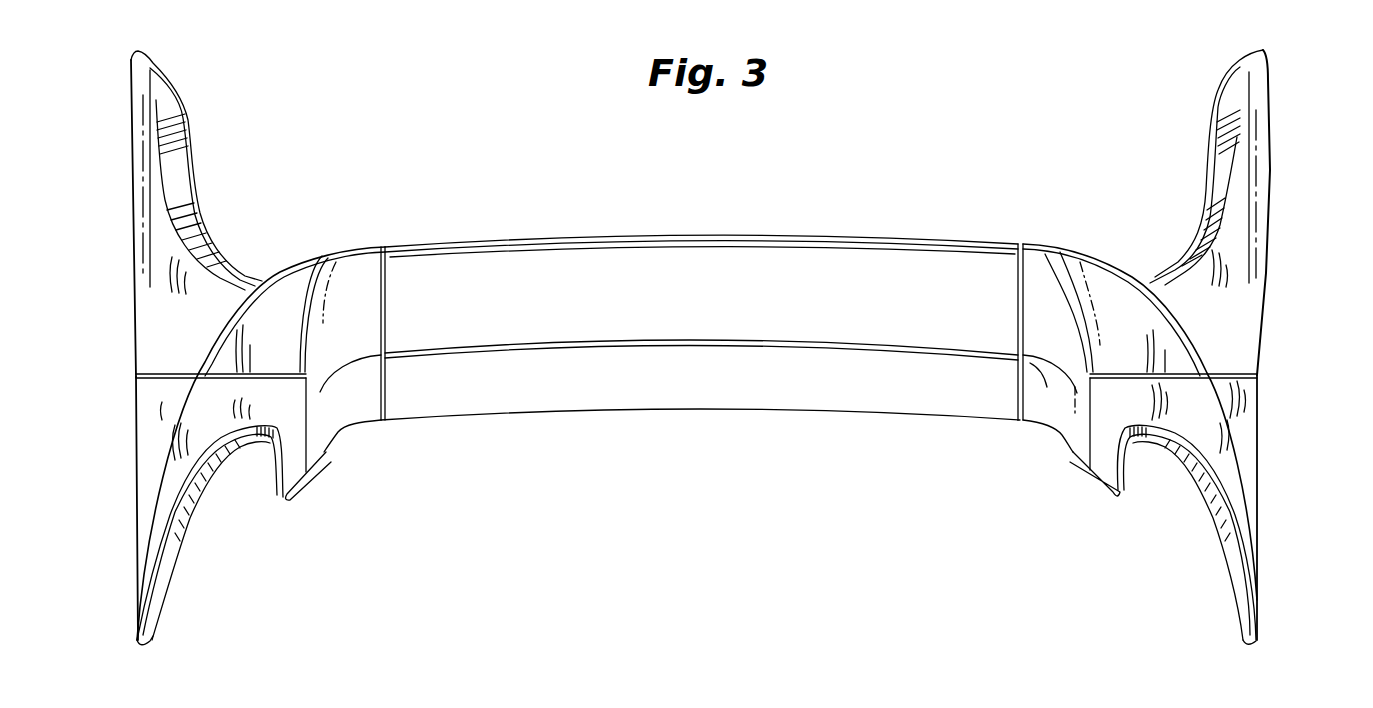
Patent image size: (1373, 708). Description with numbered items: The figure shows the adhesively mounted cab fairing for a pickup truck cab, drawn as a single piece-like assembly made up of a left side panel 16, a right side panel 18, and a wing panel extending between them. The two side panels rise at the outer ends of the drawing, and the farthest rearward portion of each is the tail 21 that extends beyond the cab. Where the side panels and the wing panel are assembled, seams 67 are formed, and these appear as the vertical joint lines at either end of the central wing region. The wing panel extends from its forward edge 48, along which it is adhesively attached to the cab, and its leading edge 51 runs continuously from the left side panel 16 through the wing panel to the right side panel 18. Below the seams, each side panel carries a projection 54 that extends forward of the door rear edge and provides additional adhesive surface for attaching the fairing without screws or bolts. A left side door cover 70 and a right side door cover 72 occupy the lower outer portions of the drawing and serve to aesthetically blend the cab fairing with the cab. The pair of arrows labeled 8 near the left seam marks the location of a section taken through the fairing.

The left side panel 16 is at (1268, 265).
The right side panel 18 is at (131, 263).
The tail 21 is at (587, 234).
The seams 67 is at (1022, 244).
The forward edge 48 is at (657, 412).
The leading edge 51 is at (332, 442).
The projection 54 is at (330, 445).
The left side door cover 70 is at (1258, 453).
The right side door cover 72 is at (137, 485).
The section line of FIG. 8 is at (422, 333).